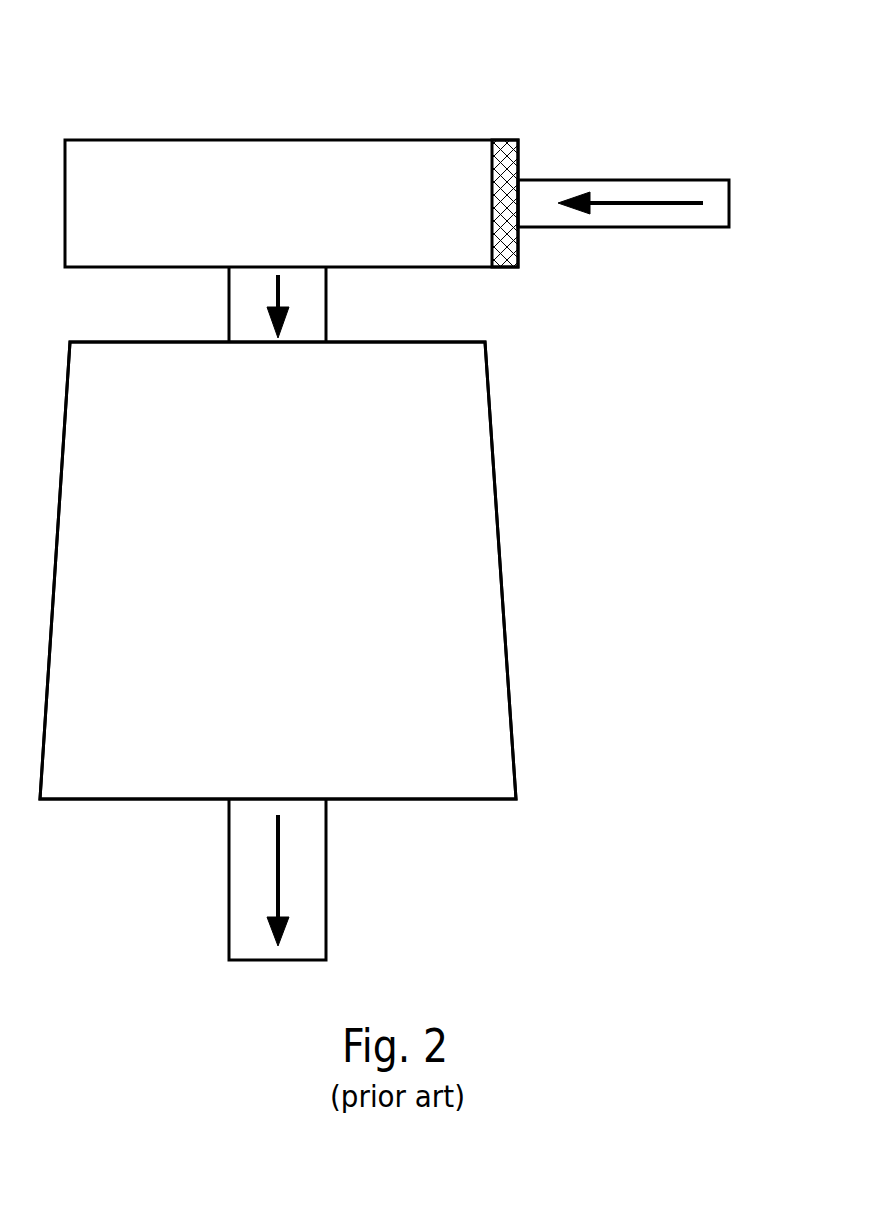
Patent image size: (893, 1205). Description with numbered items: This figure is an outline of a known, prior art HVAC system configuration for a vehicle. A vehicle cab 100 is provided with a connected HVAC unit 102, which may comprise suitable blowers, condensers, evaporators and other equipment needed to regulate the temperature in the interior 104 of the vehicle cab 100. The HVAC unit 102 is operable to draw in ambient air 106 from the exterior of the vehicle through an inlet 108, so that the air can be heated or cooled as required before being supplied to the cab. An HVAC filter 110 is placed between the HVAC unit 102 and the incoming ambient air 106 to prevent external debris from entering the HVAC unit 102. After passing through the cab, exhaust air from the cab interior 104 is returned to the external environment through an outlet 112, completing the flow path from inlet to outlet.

The vehicle cab 100 is at (497, 487).
The HVAC unit 102 is at (224, 175).
The interior of the vehicle cab 104 is at (303, 535).
The ambient air 106 is at (801, 219).
The inlet 108 is at (620, 227).
The HVAC filter 110 is at (516, 140).
The outlet 112 is at (326, 888).